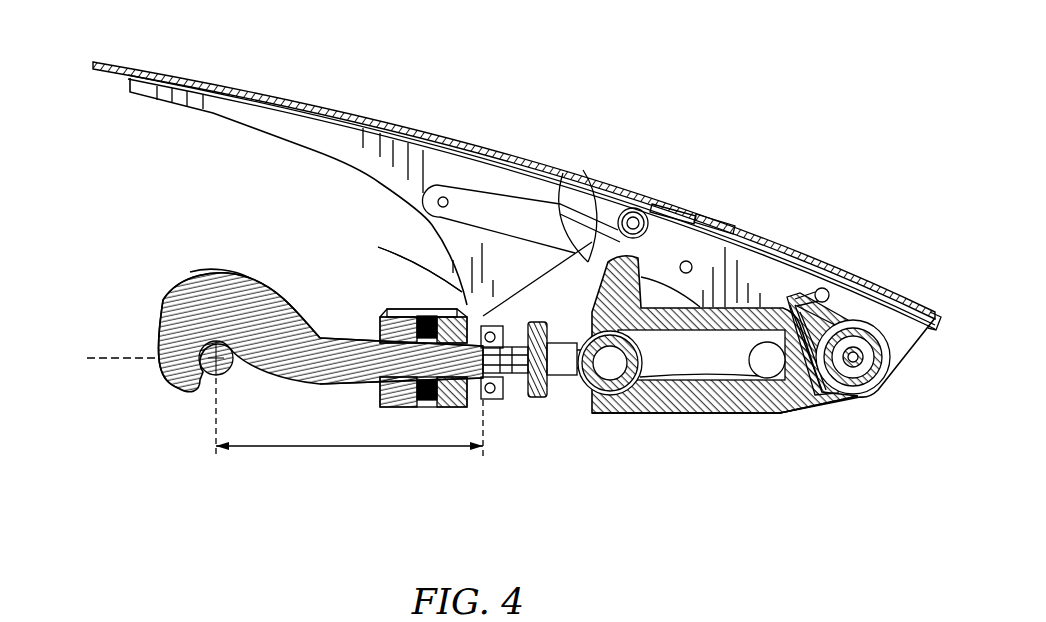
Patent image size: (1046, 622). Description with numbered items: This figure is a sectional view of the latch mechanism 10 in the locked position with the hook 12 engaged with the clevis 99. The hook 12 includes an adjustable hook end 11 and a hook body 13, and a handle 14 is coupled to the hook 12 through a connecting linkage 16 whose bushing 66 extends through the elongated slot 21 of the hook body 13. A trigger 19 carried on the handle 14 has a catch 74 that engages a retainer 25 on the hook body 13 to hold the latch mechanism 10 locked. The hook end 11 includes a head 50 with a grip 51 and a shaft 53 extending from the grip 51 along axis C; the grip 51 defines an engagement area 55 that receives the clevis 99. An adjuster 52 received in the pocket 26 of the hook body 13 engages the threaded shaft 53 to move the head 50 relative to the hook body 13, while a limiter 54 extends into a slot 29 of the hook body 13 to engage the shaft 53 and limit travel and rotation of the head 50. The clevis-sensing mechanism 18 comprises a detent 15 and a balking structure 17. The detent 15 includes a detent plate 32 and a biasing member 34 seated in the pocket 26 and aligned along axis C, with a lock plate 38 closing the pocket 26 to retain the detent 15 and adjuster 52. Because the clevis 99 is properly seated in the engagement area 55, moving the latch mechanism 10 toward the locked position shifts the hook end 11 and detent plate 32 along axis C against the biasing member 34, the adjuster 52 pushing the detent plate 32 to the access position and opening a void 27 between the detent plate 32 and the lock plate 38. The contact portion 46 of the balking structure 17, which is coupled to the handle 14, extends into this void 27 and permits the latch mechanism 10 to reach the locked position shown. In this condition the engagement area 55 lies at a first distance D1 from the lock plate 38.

The latch mechanism 10 is at (797, 117).
The adjustable hook end 11 is at (199, 272).
The hook 12 is at (178, 272).
The hook body 13 is at (619, 415).
The handle 14 is at (278, 86).
The detent 15 is at (387, 303).
The connecting linkage 16 is at (739, 395).
The balking structure 17 is at (478, 216).
The clevis-sensing mechanism 18 is at (418, 241).
The trigger 19 is at (647, 186).
The elongated slot 21 is at (706, 392).
The retainer 25 is at (650, 270).
The pocket 26 is at (485, 452).
The void 27 is at (468, 410).
The slot 29 is at (572, 413).
The detent plate 32 is at (412, 310).
The biasing member 34 is at (400, 326).
The lock plate 38 is at (510, 414).
The contact portion 46 is at (468, 320).
The head 50 is at (213, 272).
The grip 51 is at (262, 274).
The adjuster 52 is at (447, 410).
The shaft 53 is at (373, 382).
The limiter 54 is at (538, 413).
The engagement area 55 is at (163, 298).
The bushing 66 is at (627, 396).
The catch 74 is at (592, 259).
The clevis 99 is at (241, 380).
The axis C is at (130, 362).
The first distance D1 is at (250, 452).